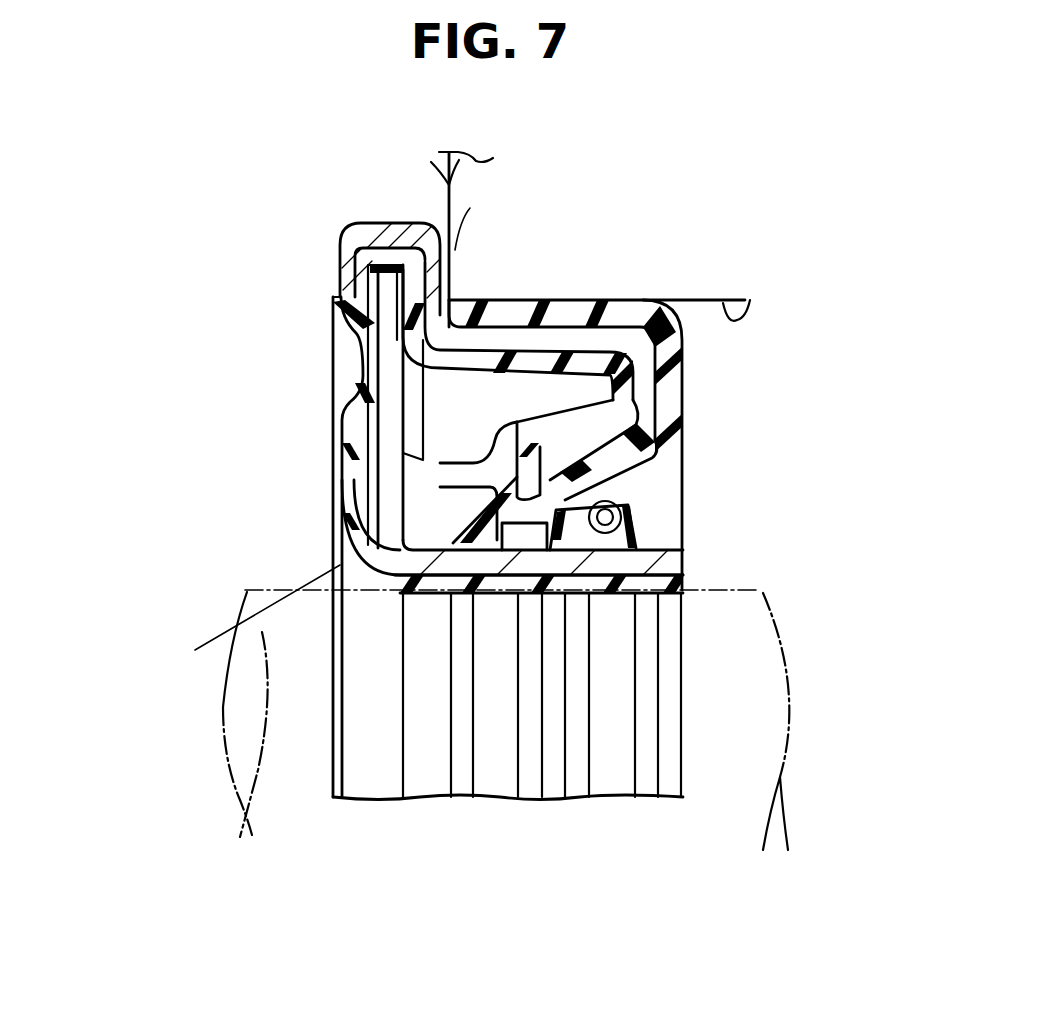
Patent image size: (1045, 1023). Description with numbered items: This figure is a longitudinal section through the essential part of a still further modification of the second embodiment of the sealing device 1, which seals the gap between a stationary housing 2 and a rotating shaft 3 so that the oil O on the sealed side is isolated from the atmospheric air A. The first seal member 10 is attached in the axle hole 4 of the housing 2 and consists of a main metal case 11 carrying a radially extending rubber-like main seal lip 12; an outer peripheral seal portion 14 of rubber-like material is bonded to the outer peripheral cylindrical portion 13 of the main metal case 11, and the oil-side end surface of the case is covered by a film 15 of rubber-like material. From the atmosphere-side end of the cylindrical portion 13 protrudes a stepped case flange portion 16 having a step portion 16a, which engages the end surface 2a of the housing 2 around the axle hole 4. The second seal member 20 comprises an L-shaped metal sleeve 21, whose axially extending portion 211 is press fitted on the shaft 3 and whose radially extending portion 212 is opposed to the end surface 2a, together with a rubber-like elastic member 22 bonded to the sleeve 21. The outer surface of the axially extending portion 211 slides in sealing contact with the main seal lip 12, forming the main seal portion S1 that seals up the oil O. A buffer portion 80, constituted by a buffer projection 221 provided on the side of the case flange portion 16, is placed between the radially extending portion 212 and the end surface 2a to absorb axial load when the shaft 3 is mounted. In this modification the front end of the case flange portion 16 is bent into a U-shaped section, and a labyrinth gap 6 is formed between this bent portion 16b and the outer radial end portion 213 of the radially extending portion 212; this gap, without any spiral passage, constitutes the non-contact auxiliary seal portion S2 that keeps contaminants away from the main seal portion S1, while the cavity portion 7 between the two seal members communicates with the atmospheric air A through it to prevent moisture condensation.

The sealing device 1 is at (250, 268).
The stationary housing 2 is at (510, 243).
The end surface 2a is at (449, 180).
The rotating shaft 3 is at (763, 593).
The axle hole 4 is at (758, 318).
The labyrinth gap 6 is at (375, 250).
The cavity portion 7 is at (458, 415).
The first seal member 10 is at (618, 407).
The main metal case 11 is at (653, 410).
The main seal lip 12 is at (563, 520).
The outer peripheral cylindrical portion 13 is at (550, 313).
The outer peripheral seal portion 14 is at (623, 313).
The film 15 is at (683, 365).
The case flange portion 16 is at (408, 230).
The step portion 16a is at (413, 248).
The bent portion 16b is at (340, 282).
The second seal member 20 is at (325, 528).
The metal sleeve 21 is at (552, 593).
The rubber-like elastic member 22 is at (248, 618).
The buffer portion 80 is at (398, 352).
The axially extending portion 211 is at (490, 614).
The radially extending portion 212 is at (327, 437).
The outer radial end portion 213 is at (392, 262).
The buffer projection 221 is at (462, 235).
The atmospheric air A is at (146, 463).
The oil O is at (808, 428).
The main seal portion S1 is at (660, 541).
The auxiliary seal portion S2 is at (305, 292).